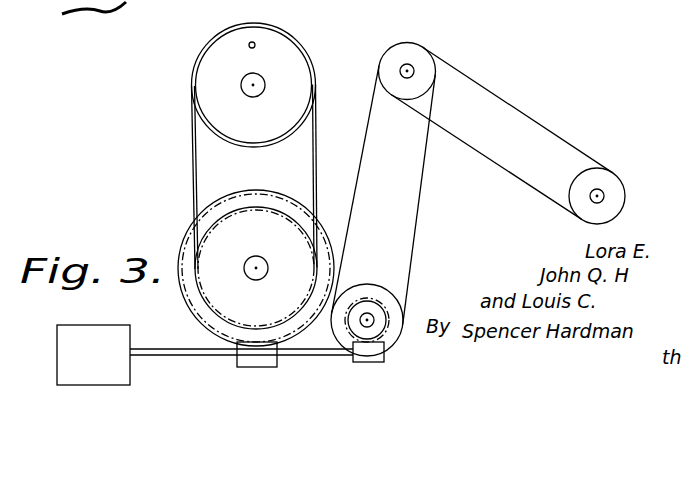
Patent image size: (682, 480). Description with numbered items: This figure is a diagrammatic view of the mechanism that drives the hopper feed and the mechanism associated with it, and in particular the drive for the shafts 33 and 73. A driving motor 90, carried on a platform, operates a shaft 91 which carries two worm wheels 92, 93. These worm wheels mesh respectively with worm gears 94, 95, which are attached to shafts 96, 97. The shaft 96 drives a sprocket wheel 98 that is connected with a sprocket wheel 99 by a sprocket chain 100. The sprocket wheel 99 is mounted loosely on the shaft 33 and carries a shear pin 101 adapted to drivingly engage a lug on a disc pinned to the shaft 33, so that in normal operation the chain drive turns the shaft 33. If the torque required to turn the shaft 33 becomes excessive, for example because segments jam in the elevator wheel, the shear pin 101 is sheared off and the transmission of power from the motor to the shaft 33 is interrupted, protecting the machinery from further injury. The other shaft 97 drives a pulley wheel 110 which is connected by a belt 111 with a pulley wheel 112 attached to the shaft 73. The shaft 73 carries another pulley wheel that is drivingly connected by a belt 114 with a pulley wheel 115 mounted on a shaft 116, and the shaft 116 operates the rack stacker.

The shaft 33 is at (262, 93).
The shaft 73 is at (411, 66).
The driving motor 90 is at (60, 365).
The shaft 91 is at (167, 357).
The worm wheel 92 is at (264, 362).
The worm wheel 93 is at (371, 362).
The worm gear 94 is at (182, 298).
The worm gear 95 is at (388, 330).
The shaft 96 is at (259, 258).
The shaft 97 is at (373, 316).
The sprocket wheel 98 is at (238, 202).
The sprocket wheel 99 is at (289, 42).
The sprocket chain 100 is at (191, 180).
The shear pin 101 is at (252, 42).
The pulley wheel 110 is at (371, 287).
The belt 111 is at (420, 195).
The pulley wheel 112 is at (396, 46).
The belt 114 is at (505, 101).
The pulley wheel 115 is at (574, 180).
The shaft 116 is at (603, 193).